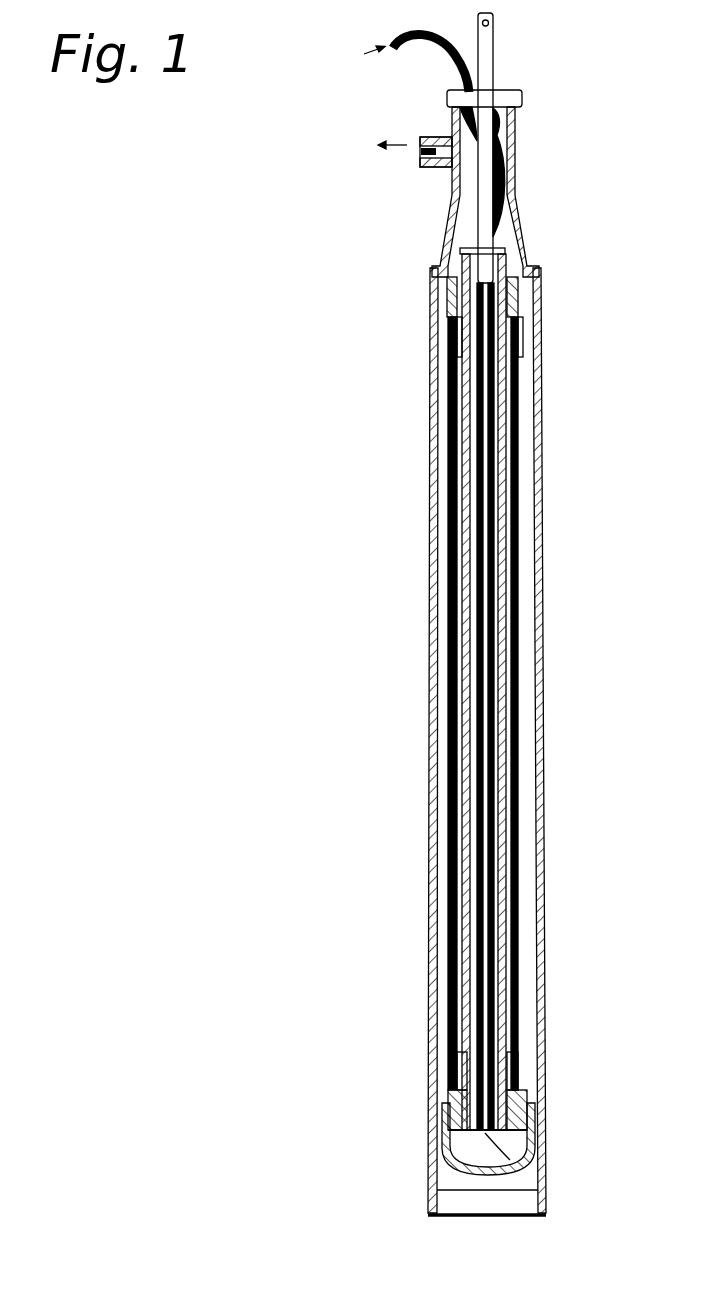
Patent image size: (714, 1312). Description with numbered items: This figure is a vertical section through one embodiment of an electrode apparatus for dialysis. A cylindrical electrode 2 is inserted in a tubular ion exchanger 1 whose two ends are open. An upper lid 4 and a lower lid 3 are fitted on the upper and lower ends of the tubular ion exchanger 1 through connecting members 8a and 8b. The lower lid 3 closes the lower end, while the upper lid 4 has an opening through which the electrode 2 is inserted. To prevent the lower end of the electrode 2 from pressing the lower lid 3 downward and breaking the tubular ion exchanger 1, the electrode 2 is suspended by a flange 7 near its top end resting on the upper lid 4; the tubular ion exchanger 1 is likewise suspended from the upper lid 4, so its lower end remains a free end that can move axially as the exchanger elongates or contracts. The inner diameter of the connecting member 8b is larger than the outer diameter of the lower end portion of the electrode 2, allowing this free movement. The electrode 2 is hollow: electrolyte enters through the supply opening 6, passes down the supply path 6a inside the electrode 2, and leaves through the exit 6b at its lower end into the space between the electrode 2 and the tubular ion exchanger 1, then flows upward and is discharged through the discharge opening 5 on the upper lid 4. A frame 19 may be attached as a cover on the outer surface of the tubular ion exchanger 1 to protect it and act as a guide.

The tubular ion exchanger 1 is at (522, 453).
The cylindrical electrode 2 is at (510, 520).
The lower lid 3 is at (535, 1127).
The upper lid 4 is at (520, 210).
The discharge opening 5 is at (418, 153).
The electrolyte supply opening 6 is at (379, 54).
The electrolyte supply path 6a is at (493, 620).
The exit 6b is at (542, 1158).
The flange 7 is at (495, 89).
The connecting member 8a is at (535, 323).
The connecting member 8b is at (528, 1058).
The frame 19 is at (542, 707).